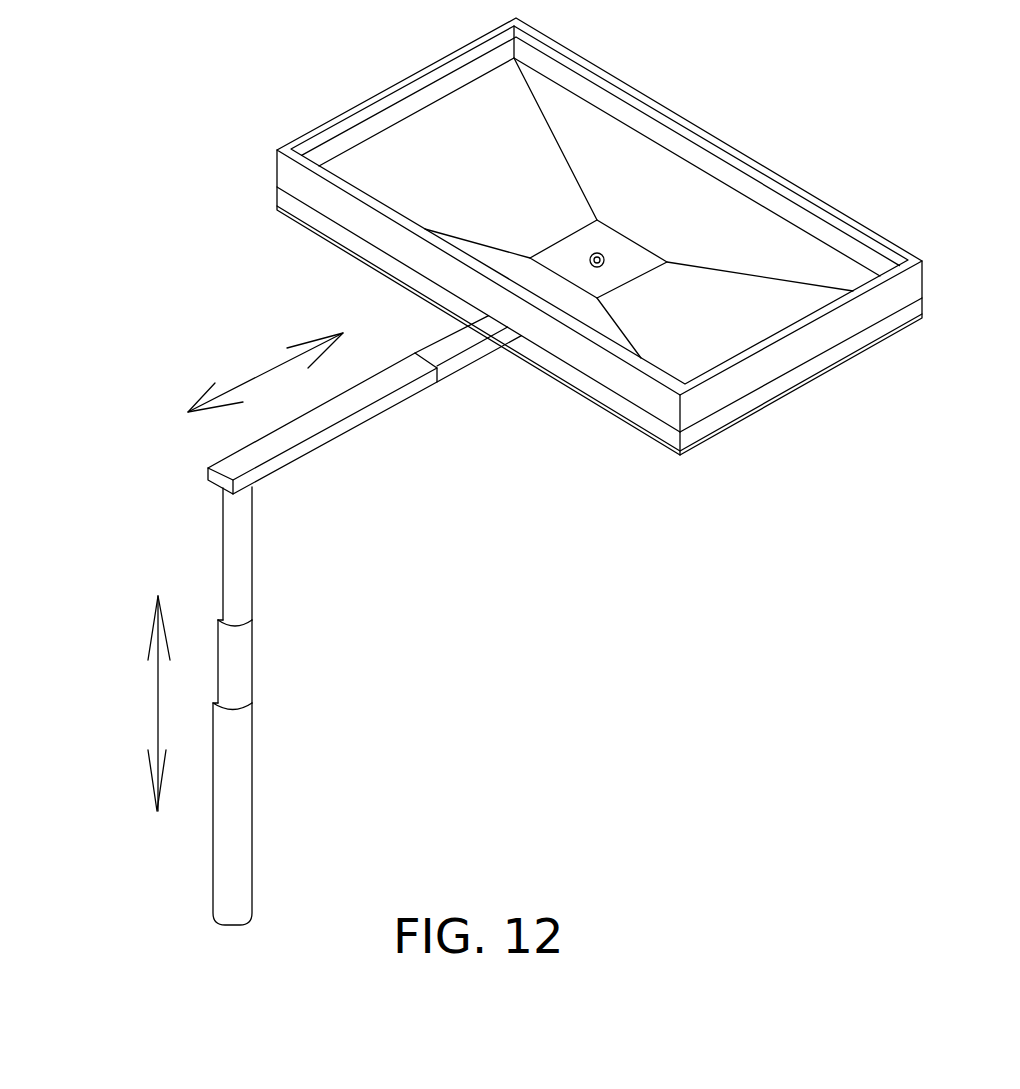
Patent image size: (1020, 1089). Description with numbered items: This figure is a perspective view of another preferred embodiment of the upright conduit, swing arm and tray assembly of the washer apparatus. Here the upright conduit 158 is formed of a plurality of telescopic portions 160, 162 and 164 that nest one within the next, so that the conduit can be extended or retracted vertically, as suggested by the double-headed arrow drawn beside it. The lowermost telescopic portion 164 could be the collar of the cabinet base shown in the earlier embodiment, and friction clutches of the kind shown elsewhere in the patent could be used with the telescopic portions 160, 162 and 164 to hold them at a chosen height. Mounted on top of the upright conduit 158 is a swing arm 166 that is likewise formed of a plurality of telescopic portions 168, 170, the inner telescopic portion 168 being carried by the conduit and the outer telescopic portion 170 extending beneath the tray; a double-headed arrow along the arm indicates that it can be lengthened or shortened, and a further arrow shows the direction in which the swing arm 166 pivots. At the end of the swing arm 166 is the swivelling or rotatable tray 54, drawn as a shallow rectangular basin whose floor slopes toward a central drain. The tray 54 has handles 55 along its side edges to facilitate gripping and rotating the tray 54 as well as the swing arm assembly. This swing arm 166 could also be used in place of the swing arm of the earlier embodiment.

The tray 54 is at (680, 115).
The handles 55 is at (280, 212).
The upright conduit 158 is at (148, 610).
The telescopic portion 160 is at (252, 543).
The telescopic portion 162 is at (252, 640).
The telescopic portion 164 is at (251, 797).
The swing arm 166 is at (432, 457).
The telescopic portion 168 is at (302, 452).
The telescopic portion 170 is at (458, 362).